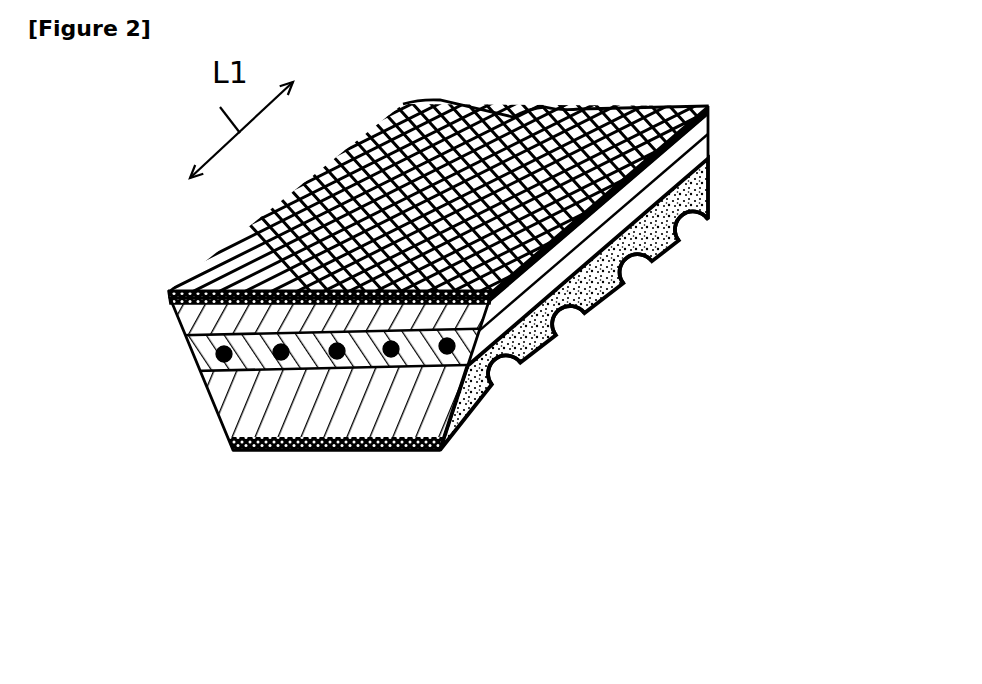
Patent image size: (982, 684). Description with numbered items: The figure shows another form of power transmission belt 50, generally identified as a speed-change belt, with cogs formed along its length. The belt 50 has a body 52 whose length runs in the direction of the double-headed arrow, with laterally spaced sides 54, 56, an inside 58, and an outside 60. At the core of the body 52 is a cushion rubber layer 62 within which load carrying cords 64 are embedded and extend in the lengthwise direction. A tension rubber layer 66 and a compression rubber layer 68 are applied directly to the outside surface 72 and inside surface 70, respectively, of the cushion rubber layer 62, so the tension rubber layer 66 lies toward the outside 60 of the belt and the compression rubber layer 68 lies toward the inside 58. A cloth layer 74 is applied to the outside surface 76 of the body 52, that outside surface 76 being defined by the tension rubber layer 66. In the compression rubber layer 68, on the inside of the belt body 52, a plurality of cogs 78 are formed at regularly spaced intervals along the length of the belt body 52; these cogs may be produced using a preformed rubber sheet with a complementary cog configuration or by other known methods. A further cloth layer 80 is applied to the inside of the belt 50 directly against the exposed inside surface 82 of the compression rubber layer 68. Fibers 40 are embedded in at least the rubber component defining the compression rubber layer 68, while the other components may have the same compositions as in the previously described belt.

The power transmission belt 50 is at (471, 342).
The body 52 is at (709, 158).
The side 54 is at (215, 382).
The side 56 is at (492, 412).
The inside 58 is at (345, 452).
The outside 60 is at (520, 113).
The cushion rubber layer 62 is at (222, 353).
The load carrying cords 64 is at (282, 358).
The tension rubber layer 66 is at (226, 290).
The compression rubber layer 68 is at (405, 450).
The inside surface 70 is at (337, 356).
The outside surface 72 is at (357, 350).
The cloth layer 74 is at (580, 110).
The outside surface 76 is at (300, 290).
The cogs 78 is at (517, 367).
The cloth layer 80 is at (388, 450).
The inside surface 82 is at (415, 447).
The fibers 40 is at (616, 318).